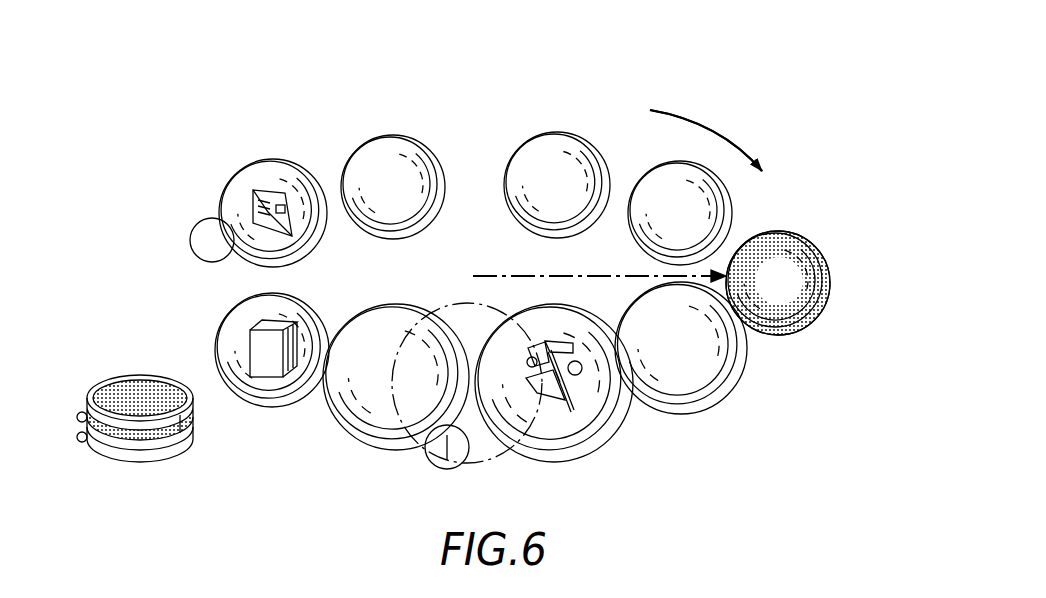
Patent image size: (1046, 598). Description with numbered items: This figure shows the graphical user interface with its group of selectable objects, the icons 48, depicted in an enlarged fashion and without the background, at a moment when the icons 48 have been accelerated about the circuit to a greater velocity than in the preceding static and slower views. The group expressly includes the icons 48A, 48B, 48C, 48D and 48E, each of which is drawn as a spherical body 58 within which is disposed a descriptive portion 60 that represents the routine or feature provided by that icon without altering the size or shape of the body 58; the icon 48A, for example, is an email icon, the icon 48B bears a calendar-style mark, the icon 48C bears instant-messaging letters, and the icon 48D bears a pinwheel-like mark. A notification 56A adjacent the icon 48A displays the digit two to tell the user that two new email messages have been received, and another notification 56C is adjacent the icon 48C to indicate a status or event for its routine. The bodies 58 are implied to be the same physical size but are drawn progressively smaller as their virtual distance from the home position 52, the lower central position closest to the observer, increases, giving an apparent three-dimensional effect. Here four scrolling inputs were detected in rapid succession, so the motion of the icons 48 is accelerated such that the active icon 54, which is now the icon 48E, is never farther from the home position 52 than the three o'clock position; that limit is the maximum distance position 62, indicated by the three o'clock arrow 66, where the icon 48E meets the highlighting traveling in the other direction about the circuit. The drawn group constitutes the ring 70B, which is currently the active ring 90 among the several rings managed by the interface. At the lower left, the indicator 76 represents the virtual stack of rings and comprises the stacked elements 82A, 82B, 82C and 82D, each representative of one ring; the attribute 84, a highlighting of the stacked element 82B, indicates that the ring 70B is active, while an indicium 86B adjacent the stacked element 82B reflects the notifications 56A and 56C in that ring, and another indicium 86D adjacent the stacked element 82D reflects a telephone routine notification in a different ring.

The icons 48 is at (744, 368).
The email icon 48A is at (262, 160).
The icon 48B is at (255, 406).
The icon 48C is at (388, 453).
The icon 48D is at (614, 438).
The icon 48E is at (833, 289).
The home position 52 is at (507, 458).
The active icon 54 is at (792, 232).
The notification 56A is at (191, 233).
The notification 56C is at (436, 468).
The body 58 is at (326, 236).
The descriptive portion 60 is at (262, 195).
The maximum distance position 62 is at (757, 234).
The three o'clock arrow 66 is at (490, 275).
The ring 70B is at (692, 101).
The indicator 76 is at (128, 449).
The stacked element 82A is at (87, 403).
The stacked element 82B is at (110, 434).
The stacked element 82C is at (131, 452).
The stacked element 82D is at (163, 456).
The attribute 84 is at (187, 419).
The indicium 86B is at (77, 417).
The indicium 86D is at (77, 437).
The active ring 90 is at (737, 111).